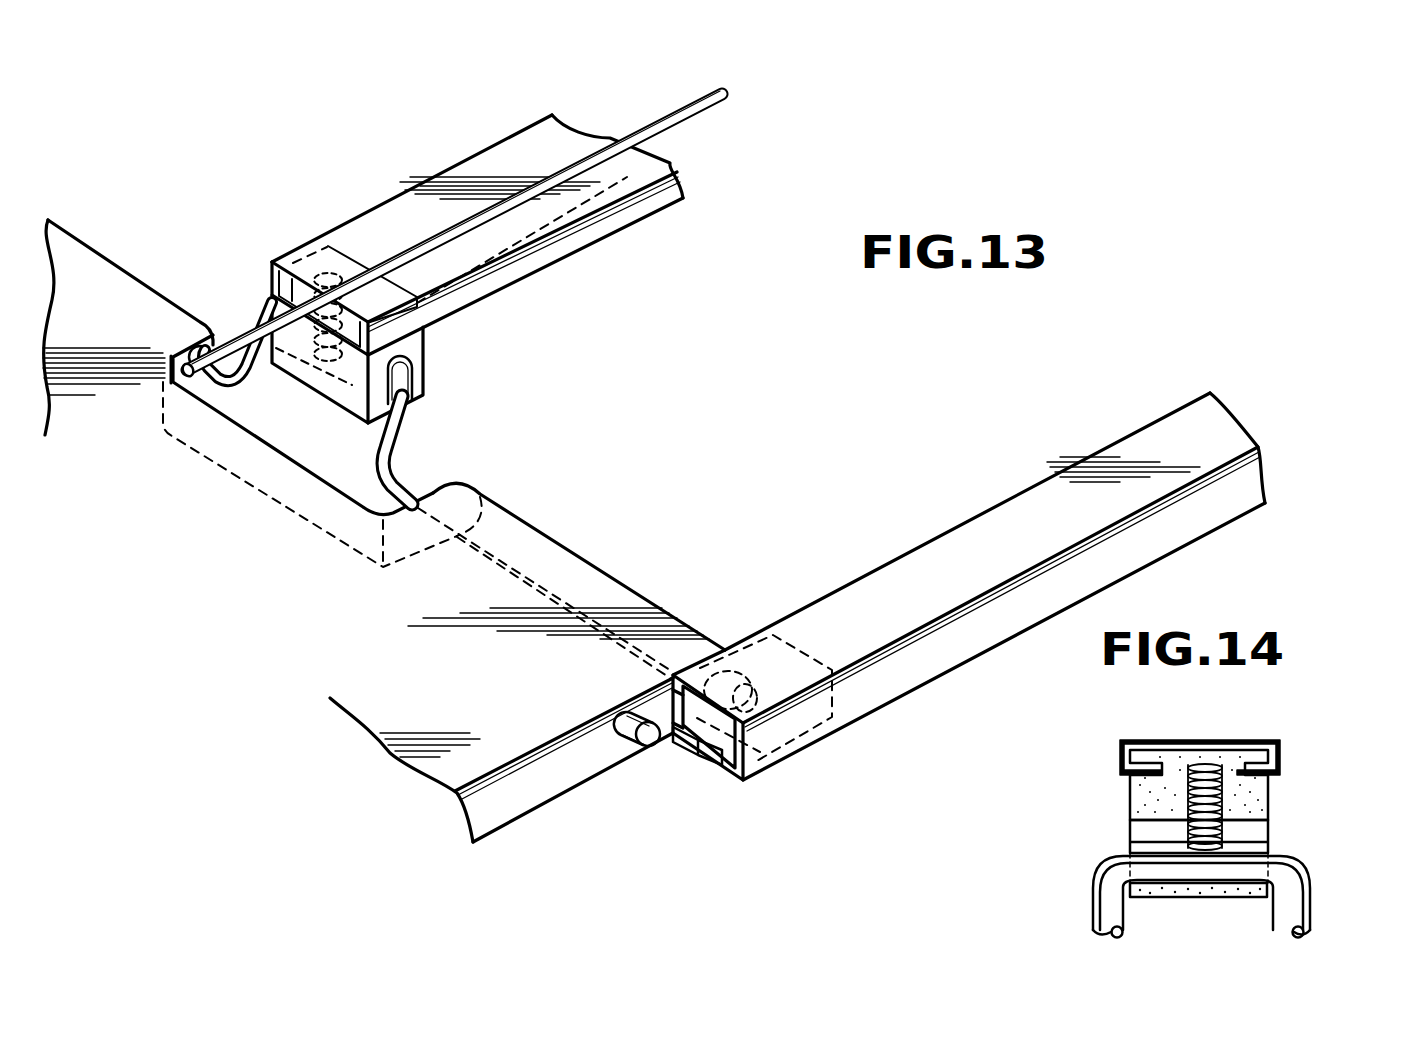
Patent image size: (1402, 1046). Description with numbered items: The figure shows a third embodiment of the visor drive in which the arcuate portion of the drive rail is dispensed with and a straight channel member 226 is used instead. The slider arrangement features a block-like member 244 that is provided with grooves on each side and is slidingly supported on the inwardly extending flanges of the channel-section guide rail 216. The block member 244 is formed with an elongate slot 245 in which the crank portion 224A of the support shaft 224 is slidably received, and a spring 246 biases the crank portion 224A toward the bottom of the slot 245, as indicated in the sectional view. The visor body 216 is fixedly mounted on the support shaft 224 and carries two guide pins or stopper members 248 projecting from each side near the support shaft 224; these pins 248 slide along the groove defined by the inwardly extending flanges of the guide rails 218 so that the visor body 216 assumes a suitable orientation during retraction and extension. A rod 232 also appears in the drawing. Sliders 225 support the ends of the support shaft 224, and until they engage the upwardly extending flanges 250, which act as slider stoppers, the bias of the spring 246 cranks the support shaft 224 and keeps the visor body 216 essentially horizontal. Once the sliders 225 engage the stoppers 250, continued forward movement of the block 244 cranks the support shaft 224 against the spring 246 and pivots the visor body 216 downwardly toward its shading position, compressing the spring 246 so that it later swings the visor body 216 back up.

In FIG. 13, the visor body 216 is at (518, 803).
In FIG. 13, the guide rail 218 is at (1040, 492).
In FIG. 13, the support shaft 224 is at (725, 680).
In FIG. 13, the crank portion 224A is at (405, 450).
In FIG. 14, the crank portion 224A is at (1287, 872).
In FIG. 13, the slider 225 is at (808, 712).
In FIG. 13, the straight channel member 226 is at (597, 222).
In FIG. 14, the straight channel member 226 is at (1243, 740).
In FIG. 13, the rod 232 is at (693, 115).
In FIG. 13, the block-like member 244 is at (418, 374).
In FIG. 14, the block-like member 244 is at (1138, 792).
In FIG. 13, the elongate slot 245 is at (402, 361).
In FIG. 14, the elongate slot 245 is at (1255, 835).
In FIG. 13, the spring 246 is at (327, 273).
In FIG. 14, the spring 246 is at (1133, 842).
In FIG. 13, the guide pin 248 is at (647, 747).
In FIG. 13, the upwardly extending flange 250 is at (708, 760).